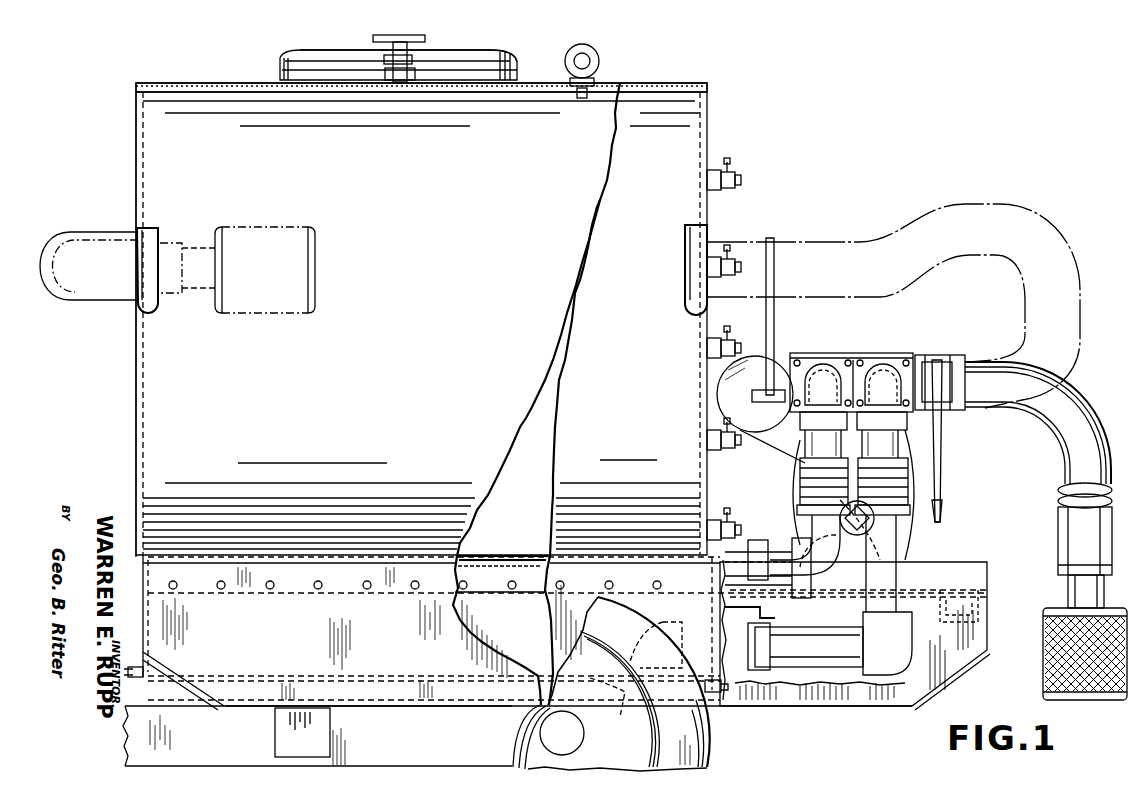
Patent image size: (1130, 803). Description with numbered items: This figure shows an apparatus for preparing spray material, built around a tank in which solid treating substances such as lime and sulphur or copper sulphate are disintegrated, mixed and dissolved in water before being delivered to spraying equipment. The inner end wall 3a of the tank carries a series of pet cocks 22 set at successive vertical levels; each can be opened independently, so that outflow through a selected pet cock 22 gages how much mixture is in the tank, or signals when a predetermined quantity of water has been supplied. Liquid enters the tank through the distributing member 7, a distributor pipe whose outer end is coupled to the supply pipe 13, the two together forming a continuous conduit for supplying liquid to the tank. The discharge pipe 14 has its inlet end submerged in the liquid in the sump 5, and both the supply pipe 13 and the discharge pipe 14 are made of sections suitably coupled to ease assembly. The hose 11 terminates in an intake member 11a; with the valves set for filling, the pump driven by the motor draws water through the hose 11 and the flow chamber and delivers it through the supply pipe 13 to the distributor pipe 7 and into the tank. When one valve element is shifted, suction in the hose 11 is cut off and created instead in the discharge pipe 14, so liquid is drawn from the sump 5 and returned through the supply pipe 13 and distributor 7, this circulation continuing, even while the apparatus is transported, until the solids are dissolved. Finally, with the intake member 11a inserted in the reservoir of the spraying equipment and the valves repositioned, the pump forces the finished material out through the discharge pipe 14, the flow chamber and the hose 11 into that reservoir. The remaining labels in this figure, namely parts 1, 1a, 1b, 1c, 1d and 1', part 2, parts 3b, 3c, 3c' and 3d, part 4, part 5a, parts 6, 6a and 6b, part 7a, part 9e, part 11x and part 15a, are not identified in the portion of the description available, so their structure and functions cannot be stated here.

The frame 1 is at (564, 631).
The frame side member 1a is at (343, 704).
The frame block 1b is at (385, 700).
The frame bracket 1c is at (975, 615).
The frame bracket 1d is at (978, 590).
The discharge pipe 1' is at (805, 638).
The base plate / wheel 2 is at (712, 750).
The inner end wall 3a is at (145, 372).
The tank side wall 3b is at (140, 410).
The brace 3c is at (195, 694).
The brace bolt 3c' is at (129, 648).
The tank top flange 3d is at (183, 86).
The lever end 4 is at (937, 523).
The sump 5 is at (620, 712).
The pedestal bolt 5a is at (715, 695).
The filler cap 6 is at (285, 75).
The cap cover 6a is at (478, 52).
The cap handle 6b is at (400, 45).
The distributing member 7 is at (499, 558).
The channel flange 7a is at (266, 590).
The pump head 9e is at (852, 356).
The hose 11 is at (1068, 456).
The intake member 11a is at (1043, 668).
The hose valve 11x is at (938, 360).
The supply pipe 13 is at (820, 442).
The discharge pipe 14 is at (900, 444).
The control lever 15a is at (775, 290).
The pet cocks 22 is at (741, 183).